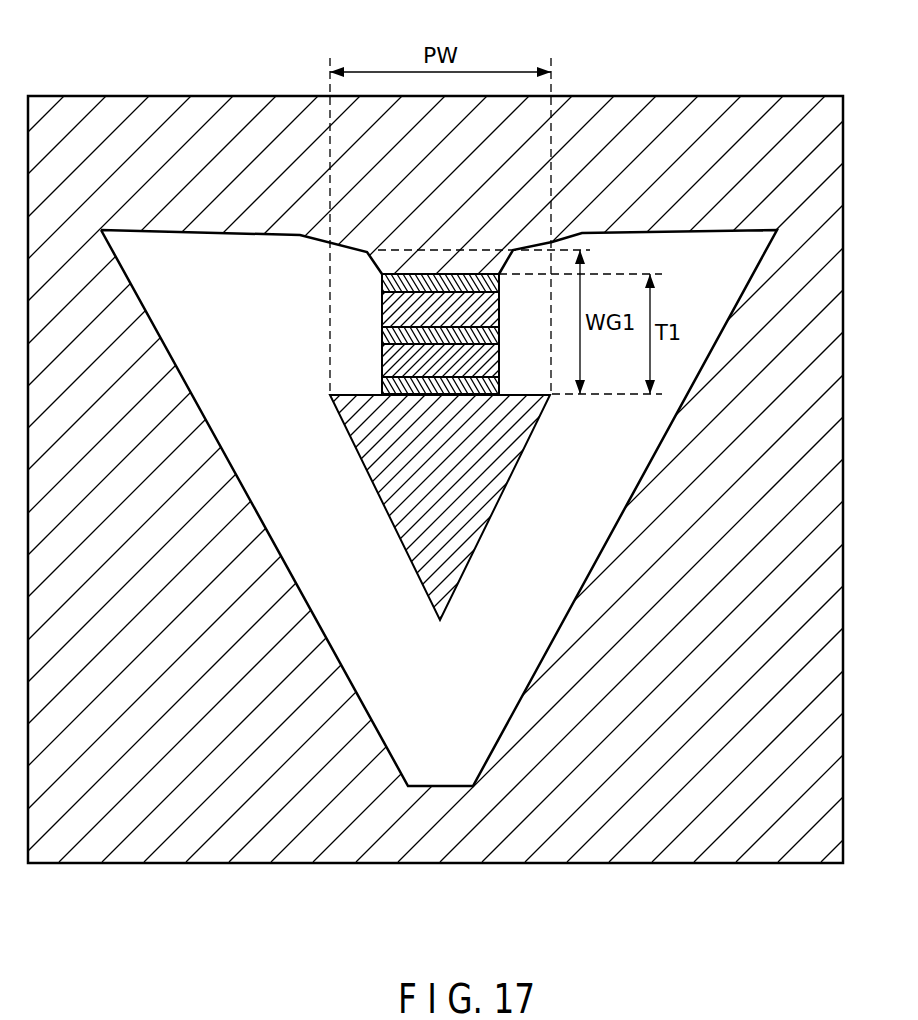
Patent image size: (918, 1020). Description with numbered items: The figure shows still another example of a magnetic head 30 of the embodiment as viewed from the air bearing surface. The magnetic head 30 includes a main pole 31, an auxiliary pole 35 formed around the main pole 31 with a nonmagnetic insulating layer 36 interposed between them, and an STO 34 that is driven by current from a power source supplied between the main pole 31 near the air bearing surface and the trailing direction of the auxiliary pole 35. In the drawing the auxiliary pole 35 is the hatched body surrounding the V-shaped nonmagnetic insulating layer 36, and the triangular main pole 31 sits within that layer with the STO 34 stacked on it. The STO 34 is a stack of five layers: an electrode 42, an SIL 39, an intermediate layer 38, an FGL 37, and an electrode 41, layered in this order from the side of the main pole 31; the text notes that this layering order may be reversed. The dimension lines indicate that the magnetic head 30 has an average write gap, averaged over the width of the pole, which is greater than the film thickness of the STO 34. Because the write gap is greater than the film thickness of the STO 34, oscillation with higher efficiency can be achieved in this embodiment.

The magnetic head 30 is at (690, 79).
The main pole 31 is at (503, 432).
The STO 34 is at (374, 342).
The auxiliary pole 35 is at (570, 863).
The nonmagnetic insulating layer 36 is at (432, 725).
The FGL 37 is at (382, 306).
The intermediate layer 38 is at (382, 334).
The SIL 39 is at (382, 362).
The electrode 41 is at (382, 283).
The electrode 42 is at (389, 398).